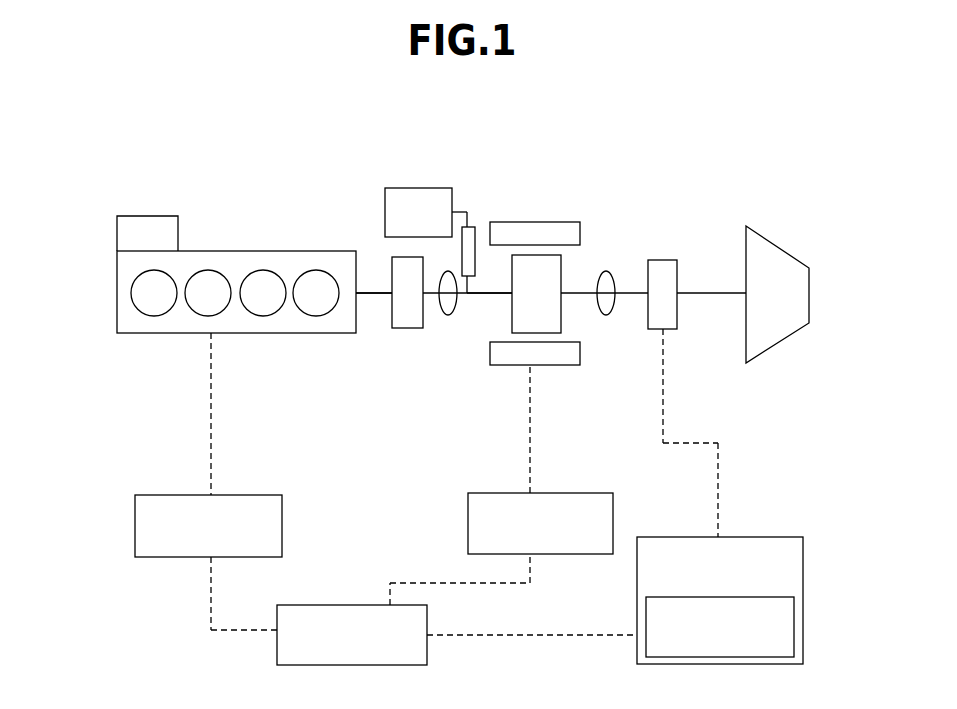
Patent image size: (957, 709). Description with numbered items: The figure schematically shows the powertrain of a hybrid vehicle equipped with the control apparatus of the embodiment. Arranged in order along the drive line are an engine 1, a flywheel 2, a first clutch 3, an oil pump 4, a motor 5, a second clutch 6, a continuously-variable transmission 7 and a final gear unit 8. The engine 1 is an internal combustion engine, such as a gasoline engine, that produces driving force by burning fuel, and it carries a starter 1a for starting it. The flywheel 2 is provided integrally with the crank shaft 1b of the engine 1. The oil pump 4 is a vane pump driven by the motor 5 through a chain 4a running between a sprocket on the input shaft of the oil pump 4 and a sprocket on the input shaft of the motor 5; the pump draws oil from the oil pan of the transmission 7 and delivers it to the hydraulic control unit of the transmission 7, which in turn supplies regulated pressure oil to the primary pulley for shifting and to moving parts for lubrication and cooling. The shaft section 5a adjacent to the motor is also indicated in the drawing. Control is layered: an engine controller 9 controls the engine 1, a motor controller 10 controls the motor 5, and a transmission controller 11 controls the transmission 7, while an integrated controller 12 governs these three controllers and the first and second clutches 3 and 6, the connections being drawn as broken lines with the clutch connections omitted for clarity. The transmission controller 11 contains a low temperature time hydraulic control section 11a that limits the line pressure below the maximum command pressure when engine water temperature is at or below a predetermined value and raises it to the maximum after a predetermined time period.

The engine 1 is at (117, 291).
The starter 1a is at (155, 216).
The crank shaft 1b is at (378, 296).
The flywheel 2 is at (391, 270).
The first clutch 3 is at (452, 318).
The oil pump 4 is at (452, 200).
The chain 4a is at (476, 237).
The motor 5 is at (550, 222).
The motor shaft 5a is at (488, 296).
The second clutch 6 is at (609, 318).
The continuously-variable transmission 7 is at (665, 260).
The final gear unit 8 is at (788, 253).
The engine controller 9 is at (135, 500).
The motor controller 10 is at (468, 512).
The transmission controller 11 is at (803, 568).
The low temperature time hydraulic control section 11a is at (795, 633).
The integrated controller 12 is at (427, 657).